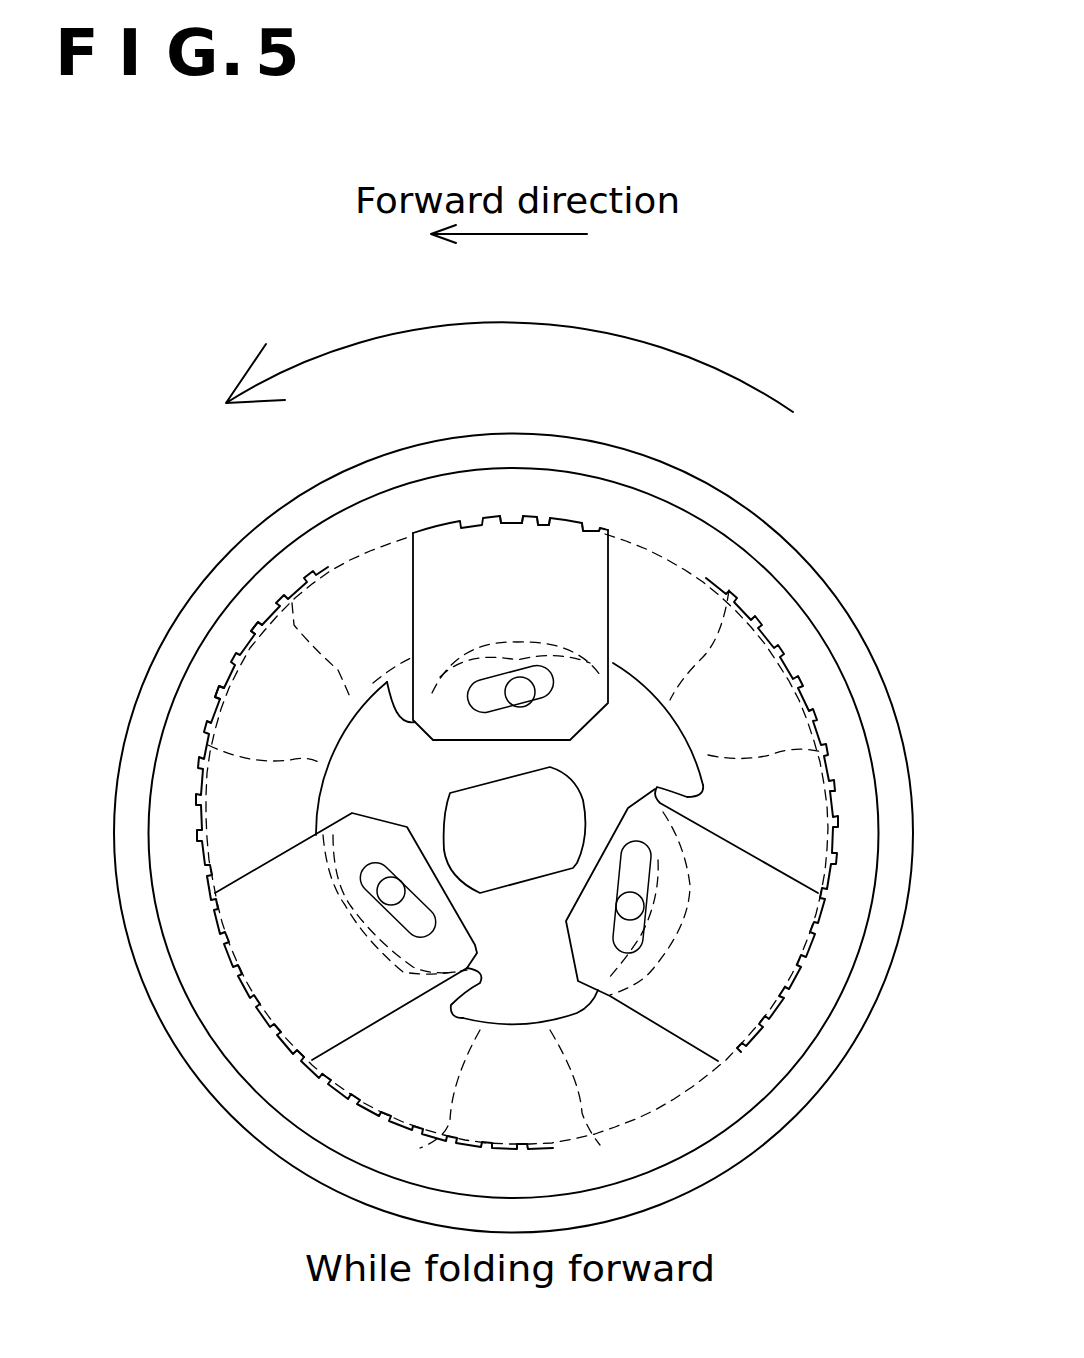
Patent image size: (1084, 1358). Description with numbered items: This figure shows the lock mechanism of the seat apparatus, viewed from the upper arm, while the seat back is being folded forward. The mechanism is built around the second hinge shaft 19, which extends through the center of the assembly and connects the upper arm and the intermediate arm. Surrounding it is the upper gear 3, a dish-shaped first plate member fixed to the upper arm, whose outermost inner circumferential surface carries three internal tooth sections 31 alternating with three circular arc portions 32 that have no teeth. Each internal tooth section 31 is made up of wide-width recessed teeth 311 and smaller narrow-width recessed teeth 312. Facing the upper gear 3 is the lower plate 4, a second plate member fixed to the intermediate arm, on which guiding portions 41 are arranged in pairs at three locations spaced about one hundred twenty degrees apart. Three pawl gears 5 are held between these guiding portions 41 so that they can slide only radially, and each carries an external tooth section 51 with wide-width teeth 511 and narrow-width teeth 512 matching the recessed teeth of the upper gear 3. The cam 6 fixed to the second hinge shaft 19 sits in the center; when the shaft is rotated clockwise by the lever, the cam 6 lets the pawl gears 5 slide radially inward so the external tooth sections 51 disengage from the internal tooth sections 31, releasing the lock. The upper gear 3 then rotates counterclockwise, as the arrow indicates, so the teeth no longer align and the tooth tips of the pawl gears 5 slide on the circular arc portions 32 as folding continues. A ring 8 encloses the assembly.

The upper gear 3 is at (371, 508).
The internal tooth section 31 is at (247, 597).
The wide-width recessed tooth 311 is at (250, 649).
The narrow-width recessed tooth 312 is at (233, 685).
The circular arc portion 32 is at (523, 483).
The lower plate 4 is at (746, 695).
The guiding portion 41 is at (510, 645).
The pawl gear 5 is at (510, 635).
The external tooth section 51 is at (530, 552).
The wide-width tooth 511 is at (605, 527).
The narrow-width tooth 512 is at (552, 517).
The cam 6 is at (466, 925).
The ring 8 is at (816, 569).
The second hinge shaft 19 is at (515, 830).